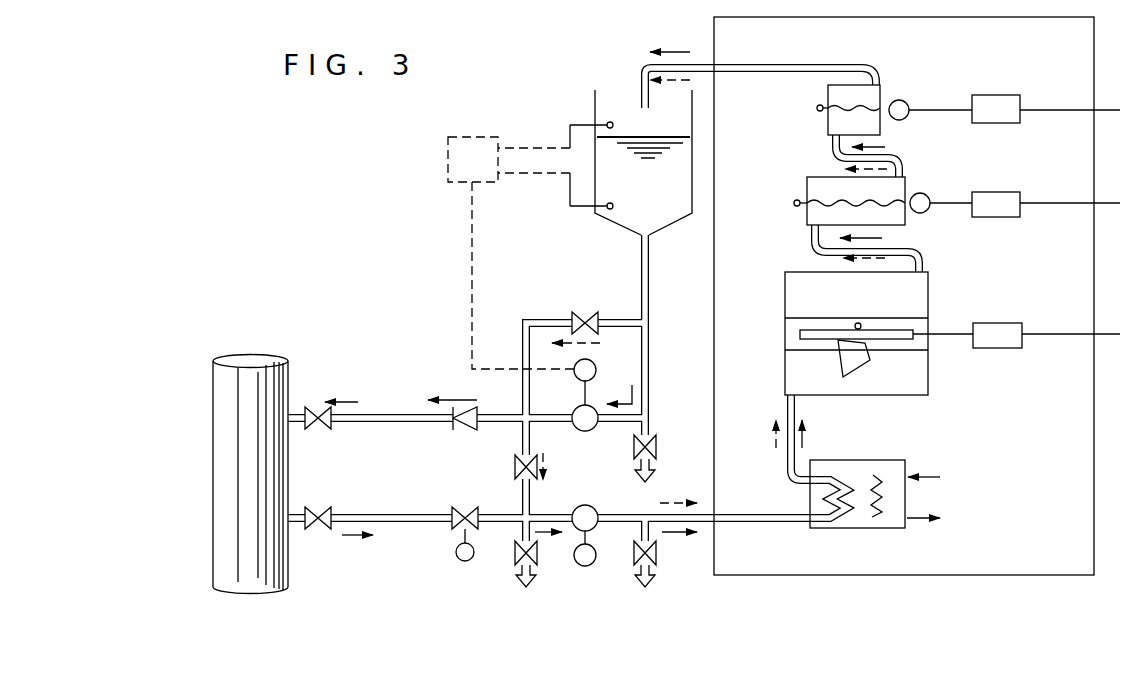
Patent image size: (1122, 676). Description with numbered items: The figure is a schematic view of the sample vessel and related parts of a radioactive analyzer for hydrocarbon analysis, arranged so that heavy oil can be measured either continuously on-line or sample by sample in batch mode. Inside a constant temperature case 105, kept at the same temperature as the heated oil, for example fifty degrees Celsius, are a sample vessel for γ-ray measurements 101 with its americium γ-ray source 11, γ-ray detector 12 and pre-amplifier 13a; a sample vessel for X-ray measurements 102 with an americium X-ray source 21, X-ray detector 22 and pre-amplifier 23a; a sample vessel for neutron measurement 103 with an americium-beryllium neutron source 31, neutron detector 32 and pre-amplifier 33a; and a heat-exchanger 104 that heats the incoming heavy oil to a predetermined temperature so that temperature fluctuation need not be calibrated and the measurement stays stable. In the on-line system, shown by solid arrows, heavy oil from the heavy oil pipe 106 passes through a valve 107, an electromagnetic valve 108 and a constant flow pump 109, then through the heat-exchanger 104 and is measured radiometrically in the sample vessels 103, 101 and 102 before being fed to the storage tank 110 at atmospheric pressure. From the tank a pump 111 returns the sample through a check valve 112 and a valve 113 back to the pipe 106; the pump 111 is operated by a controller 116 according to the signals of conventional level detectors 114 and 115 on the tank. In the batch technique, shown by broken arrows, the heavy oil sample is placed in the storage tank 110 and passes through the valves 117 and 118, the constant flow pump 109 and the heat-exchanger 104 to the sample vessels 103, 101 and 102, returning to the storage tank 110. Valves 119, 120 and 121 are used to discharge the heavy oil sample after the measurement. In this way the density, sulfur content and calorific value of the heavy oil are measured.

The γ-ray source 11 is at (794, 203).
The γ-ray detector 12 is at (921, 193).
The pre-amplifier 13a is at (990, 192).
The X-ray source 21 is at (817, 107).
The X-ray detector 22 is at (900, 100).
The pre-amplifier 23a is at (990, 96).
The neutron source 31 is at (858, 323).
The neutron detector 32 is at (884, 330).
The pre-amplifier 33a is at (993, 323).
The sample vessel for γ-ray measurements 101 is at (805, 224).
The sample vessel for X-ray measurements 102 is at (828, 135).
The sample vessel for neutron measurement 103 is at (784, 384).
The heat-exchanger 104 is at (810, 506).
The constant temperature case 105 is at (848, 575).
The heavy oil pipe 106 is at (217, 527).
The valve 107 is at (318, 531).
The electromagnetic valve 108 is at (457, 530).
The constant flow pump 109 is at (575, 528).
The storage tank 110 is at (593, 92).
The pump 111 is at (596, 430).
The check valve 112 is at (456, 431).
The valve 113 is at (314, 431).
The level detector 114 is at (587, 123).
The level detector 115 is at (587, 207).
The controller 116 is at (448, 168).
The valve 117 is at (587, 310).
The valve 118 is at (514, 472).
The valve 119 is at (516, 553).
The valve 120 is at (656, 452).
The valve 121 is at (656, 559).